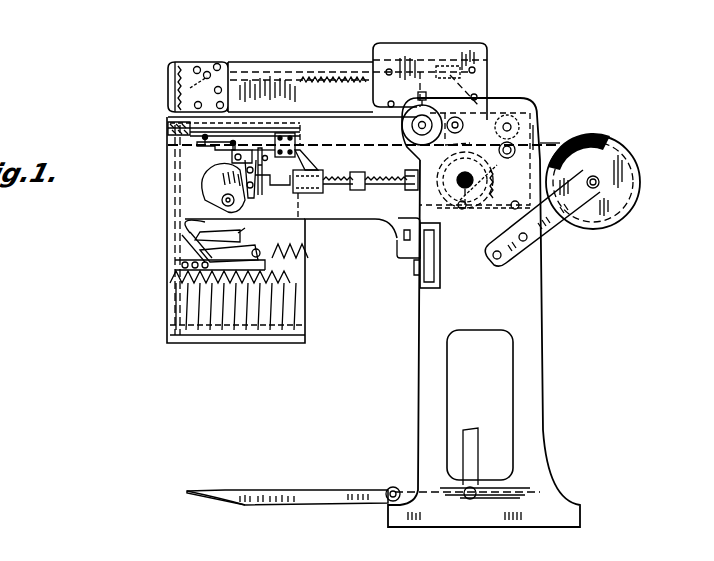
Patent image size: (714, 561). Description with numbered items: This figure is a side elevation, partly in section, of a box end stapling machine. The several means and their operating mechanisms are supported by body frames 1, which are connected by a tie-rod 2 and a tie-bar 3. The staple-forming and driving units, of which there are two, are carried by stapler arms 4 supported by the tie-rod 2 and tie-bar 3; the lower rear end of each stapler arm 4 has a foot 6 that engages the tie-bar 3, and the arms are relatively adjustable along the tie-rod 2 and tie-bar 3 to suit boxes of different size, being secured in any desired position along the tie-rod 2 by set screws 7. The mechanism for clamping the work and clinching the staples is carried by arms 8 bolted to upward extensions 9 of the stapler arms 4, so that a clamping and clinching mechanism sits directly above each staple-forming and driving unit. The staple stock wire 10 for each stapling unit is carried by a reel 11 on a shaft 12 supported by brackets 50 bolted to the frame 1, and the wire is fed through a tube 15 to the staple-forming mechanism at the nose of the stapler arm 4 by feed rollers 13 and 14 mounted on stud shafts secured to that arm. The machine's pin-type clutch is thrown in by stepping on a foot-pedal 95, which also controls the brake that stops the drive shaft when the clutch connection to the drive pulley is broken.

The body frame 1 is at (537, 380).
The tie-rod 2 is at (421, 122).
The tie-bar 3 is at (424, 263).
The stapler arm 4 is at (332, 213).
The foot 6 is at (396, 240).
The set screw 7 is at (426, 104).
The arm 8 is at (314, 70).
The upward extension 9 is at (428, 56).
The staple stock wire 10 is at (535, 148).
The reel 11 is at (605, 225).
The shaft 12 is at (599, 182).
The feed roller 13 is at (512, 108).
The feed roller 14 is at (536, 143).
The tube 15 is at (362, 140).
The bracket 50 is at (545, 232).
The foot-pedal 95 is at (240, 489).